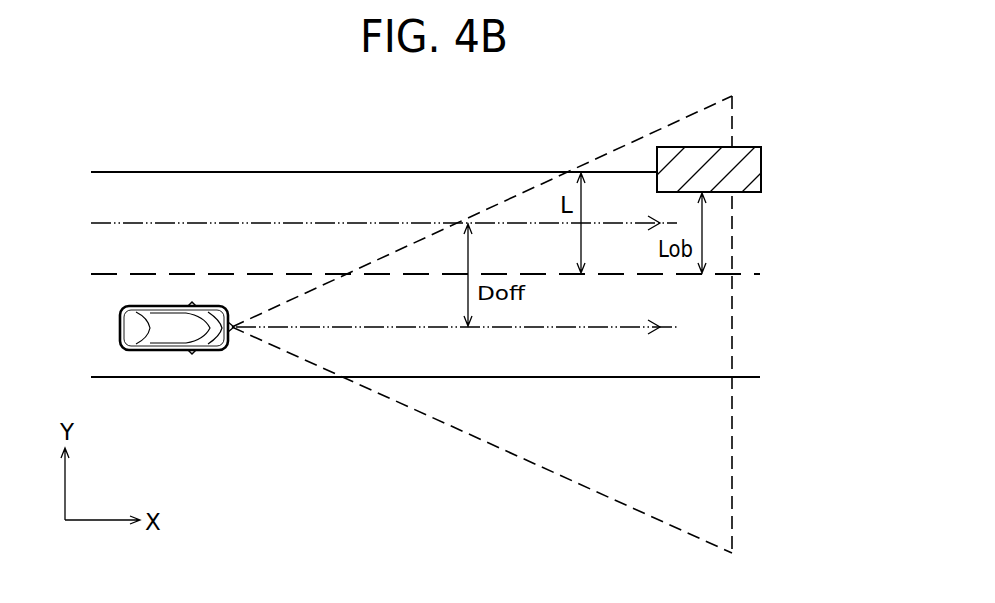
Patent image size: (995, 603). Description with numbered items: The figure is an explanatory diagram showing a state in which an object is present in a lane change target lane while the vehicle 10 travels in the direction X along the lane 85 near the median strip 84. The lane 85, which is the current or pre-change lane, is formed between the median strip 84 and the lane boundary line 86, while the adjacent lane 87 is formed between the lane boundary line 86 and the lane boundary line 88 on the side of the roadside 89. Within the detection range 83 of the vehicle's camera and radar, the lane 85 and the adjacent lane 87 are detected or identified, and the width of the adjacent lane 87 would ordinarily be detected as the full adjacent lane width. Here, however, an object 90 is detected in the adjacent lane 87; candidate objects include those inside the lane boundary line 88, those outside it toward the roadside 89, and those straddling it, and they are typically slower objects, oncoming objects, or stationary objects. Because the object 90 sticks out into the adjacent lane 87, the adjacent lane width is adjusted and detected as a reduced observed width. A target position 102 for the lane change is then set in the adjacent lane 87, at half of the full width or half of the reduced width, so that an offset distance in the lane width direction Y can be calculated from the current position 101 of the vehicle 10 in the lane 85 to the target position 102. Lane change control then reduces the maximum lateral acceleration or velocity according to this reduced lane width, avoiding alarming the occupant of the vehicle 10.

The vehicle 10 is at (120, 325).
The detection range 83 is at (470, 438).
The median strip 84 is at (227, 377).
The lane 85 is at (740, 328).
The lane boundary line 86 is at (747, 275).
The adjacent lane 87 is at (740, 222).
The lane boundary line 88 is at (403, 172).
The roadside 89 is at (293, 160).
The object 90 is at (761, 160).
The current position 101 is at (530, 327).
The target position 102 is at (397, 220).